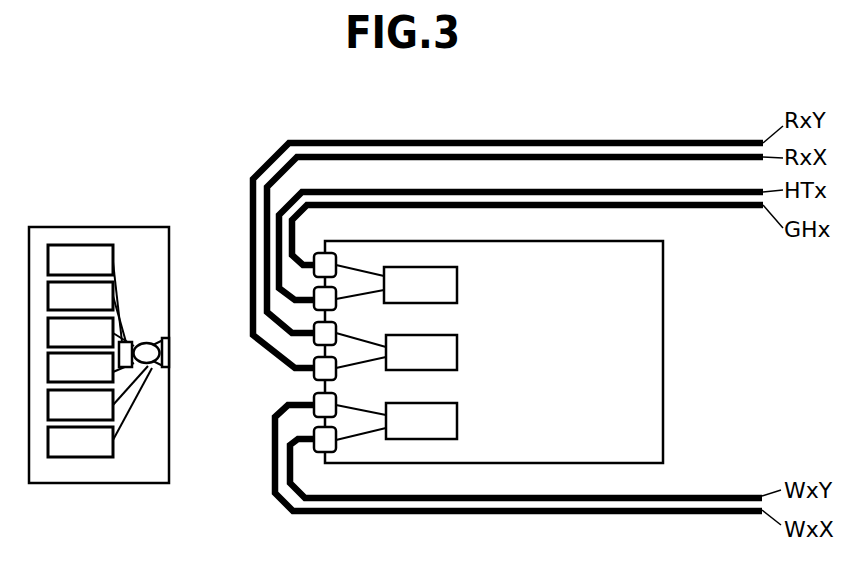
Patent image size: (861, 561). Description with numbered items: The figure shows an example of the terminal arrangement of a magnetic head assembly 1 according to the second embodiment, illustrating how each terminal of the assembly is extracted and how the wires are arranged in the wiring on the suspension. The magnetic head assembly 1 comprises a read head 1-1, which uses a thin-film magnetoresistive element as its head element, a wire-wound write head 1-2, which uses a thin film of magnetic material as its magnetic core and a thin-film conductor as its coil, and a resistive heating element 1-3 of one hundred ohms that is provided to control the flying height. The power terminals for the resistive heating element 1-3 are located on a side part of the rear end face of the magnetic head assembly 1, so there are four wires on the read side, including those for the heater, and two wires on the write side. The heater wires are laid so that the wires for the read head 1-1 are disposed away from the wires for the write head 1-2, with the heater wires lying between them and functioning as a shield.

The magnetic head assembly 1 is at (150, 257).
The read head 1-1 is at (453, 358).
The write head 1-2 is at (457, 425).
The resistive heating element 1-3 is at (457, 284).